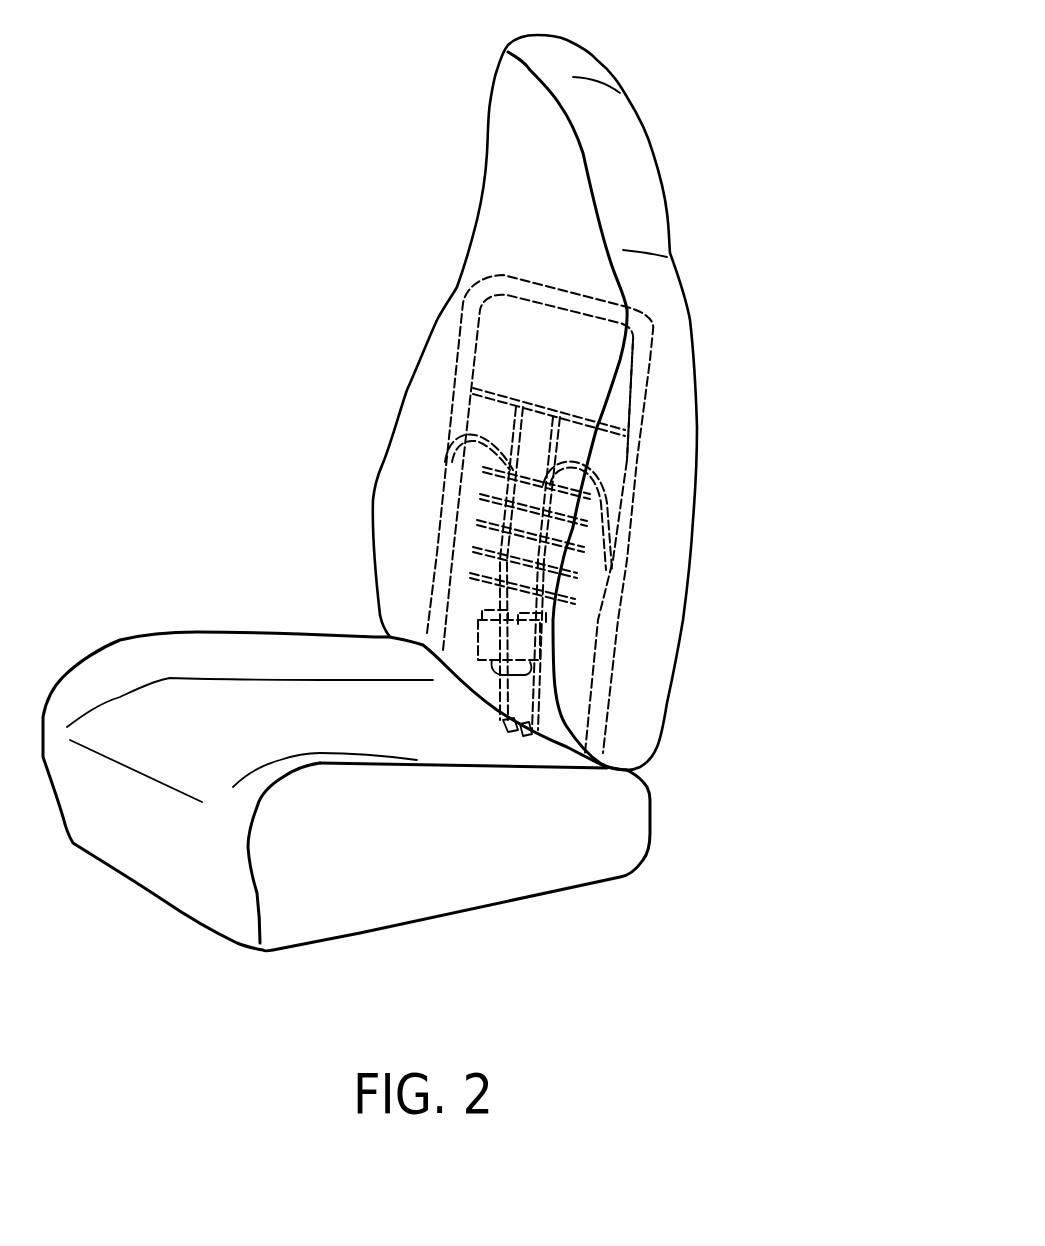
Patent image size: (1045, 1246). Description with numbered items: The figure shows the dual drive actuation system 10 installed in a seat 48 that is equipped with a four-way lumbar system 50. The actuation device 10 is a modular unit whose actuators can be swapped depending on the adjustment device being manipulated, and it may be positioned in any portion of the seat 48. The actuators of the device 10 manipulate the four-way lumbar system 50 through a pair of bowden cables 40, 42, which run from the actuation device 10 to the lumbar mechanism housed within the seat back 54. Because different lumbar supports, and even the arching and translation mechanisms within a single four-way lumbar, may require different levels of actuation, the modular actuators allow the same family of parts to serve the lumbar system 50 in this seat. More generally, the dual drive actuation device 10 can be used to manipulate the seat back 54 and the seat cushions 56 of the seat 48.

The dual drive actuation system 10 is at (510, 747).
The bowden cable 40 is at (457, 423).
The bowden cable 42 is at (610, 480).
The seat 48 is at (667, 623).
The four-way lumbar system 50 is at (510, 567).
The seat back 54 is at (550, 617).
The seat cushions 56 is at (573, 690).